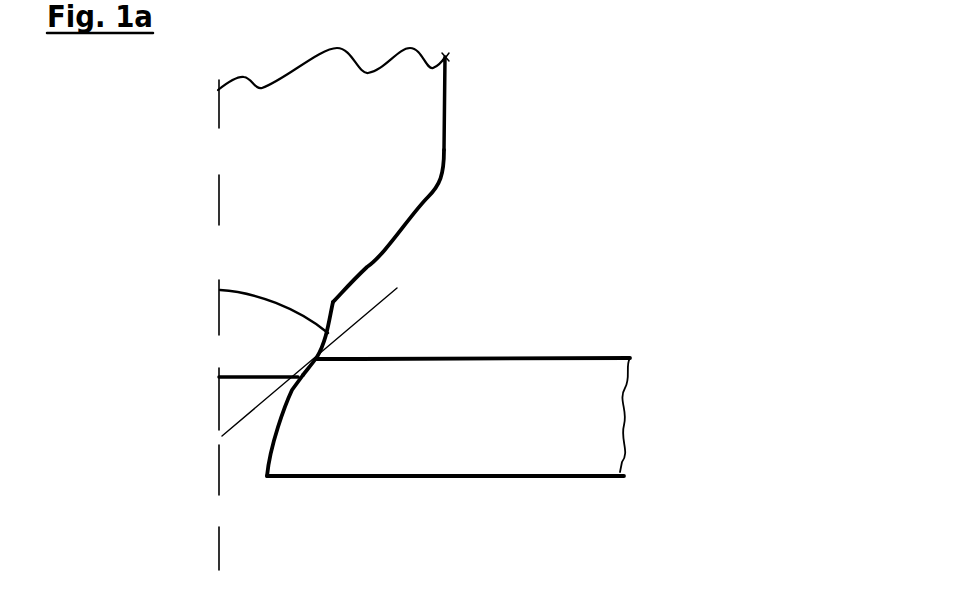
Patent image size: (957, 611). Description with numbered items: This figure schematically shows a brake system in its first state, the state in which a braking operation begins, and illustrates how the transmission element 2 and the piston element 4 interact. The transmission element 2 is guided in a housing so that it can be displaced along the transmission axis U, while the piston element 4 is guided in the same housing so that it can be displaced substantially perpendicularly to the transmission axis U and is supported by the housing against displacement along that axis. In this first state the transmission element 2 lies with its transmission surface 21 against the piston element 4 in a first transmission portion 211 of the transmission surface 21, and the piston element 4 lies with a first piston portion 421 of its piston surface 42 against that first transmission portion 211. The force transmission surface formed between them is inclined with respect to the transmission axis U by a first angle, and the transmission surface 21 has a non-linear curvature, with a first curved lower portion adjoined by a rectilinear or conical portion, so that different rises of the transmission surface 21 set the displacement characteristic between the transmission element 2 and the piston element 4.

The transmission element 2 is at (427, 102).
The transmission surface 21 is at (399, 237).
The first transmission portion 211 is at (300, 367).
The piston element 4 is at (571, 568).
The piston surface 42 is at (276, 418).
The first piston portion 421 is at (368, 362).
The transmission axis U is at (217, 193).